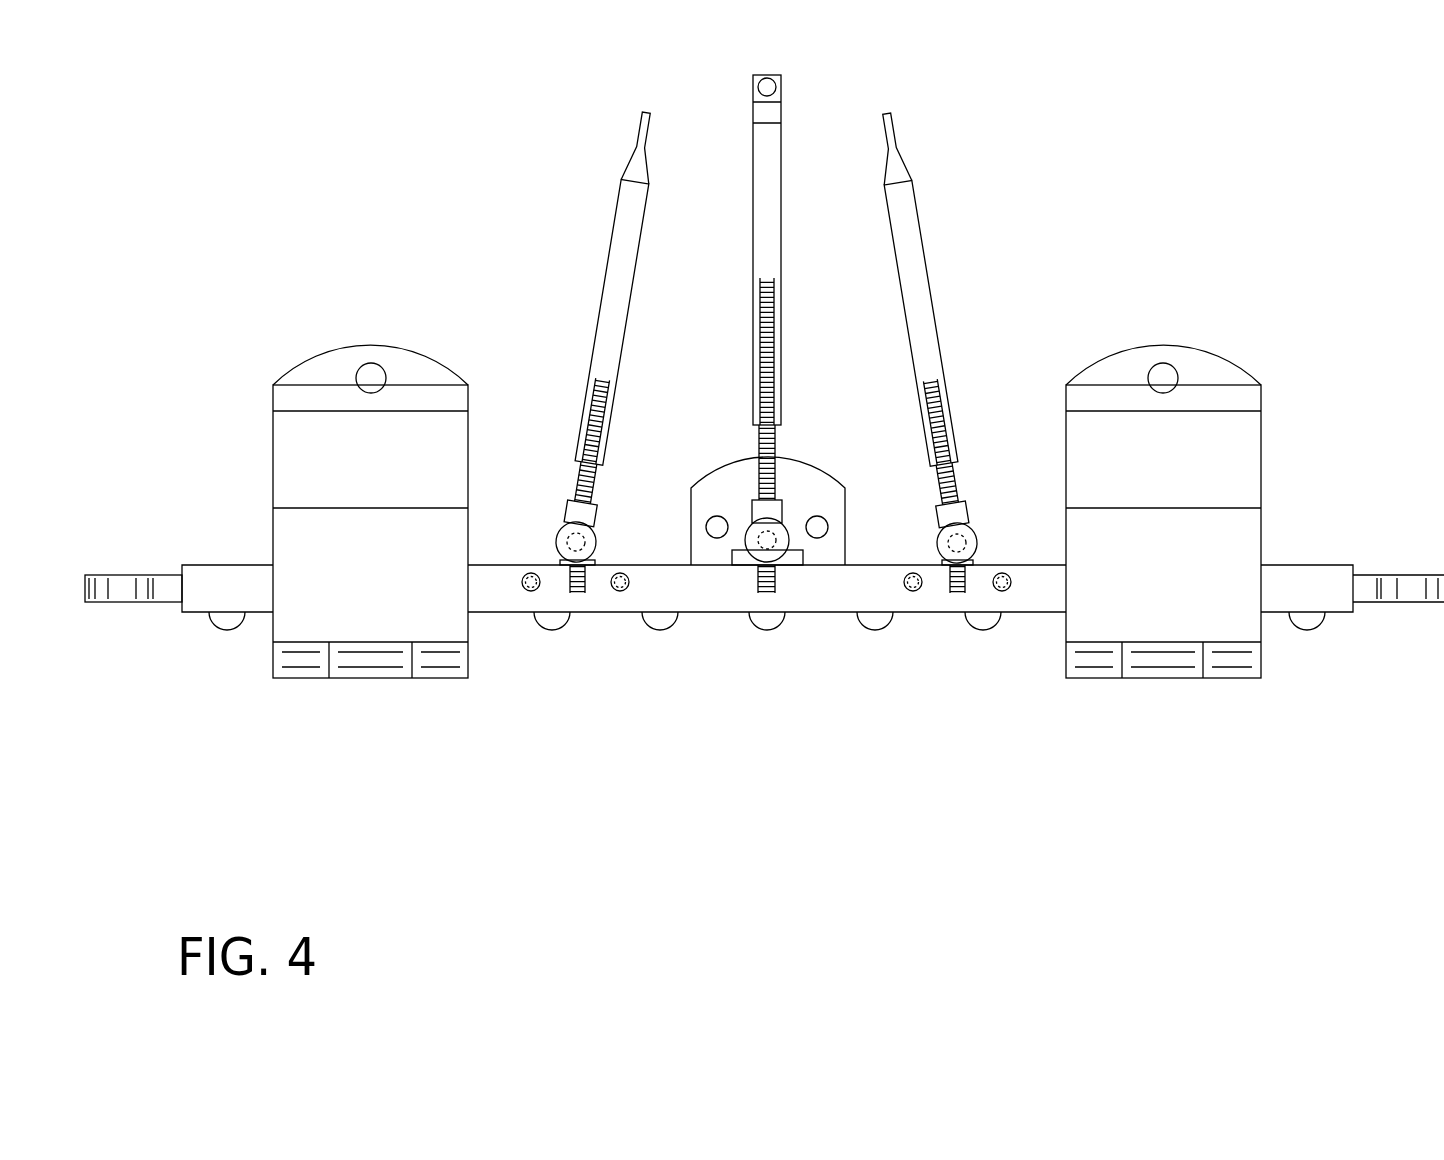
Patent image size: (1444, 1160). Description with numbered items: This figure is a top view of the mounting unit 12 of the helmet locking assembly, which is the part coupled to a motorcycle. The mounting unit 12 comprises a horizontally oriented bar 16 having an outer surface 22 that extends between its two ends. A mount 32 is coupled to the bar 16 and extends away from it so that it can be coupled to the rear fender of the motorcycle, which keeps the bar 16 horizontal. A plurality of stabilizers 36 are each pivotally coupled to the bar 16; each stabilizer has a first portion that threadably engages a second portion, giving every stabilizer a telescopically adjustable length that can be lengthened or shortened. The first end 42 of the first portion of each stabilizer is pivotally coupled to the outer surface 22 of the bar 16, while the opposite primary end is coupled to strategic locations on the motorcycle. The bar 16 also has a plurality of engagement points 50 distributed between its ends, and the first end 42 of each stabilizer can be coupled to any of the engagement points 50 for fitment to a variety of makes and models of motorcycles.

The mounting unit 12 is at (764, 658).
The bar 16 is at (720, 612).
The outer surface 22 is at (1053, 585).
The mount 32 is at (705, 476).
The stabilizers 36 is at (717, 320).
The first end 42 is at (942, 568).
The engagement points 50 is at (622, 592).